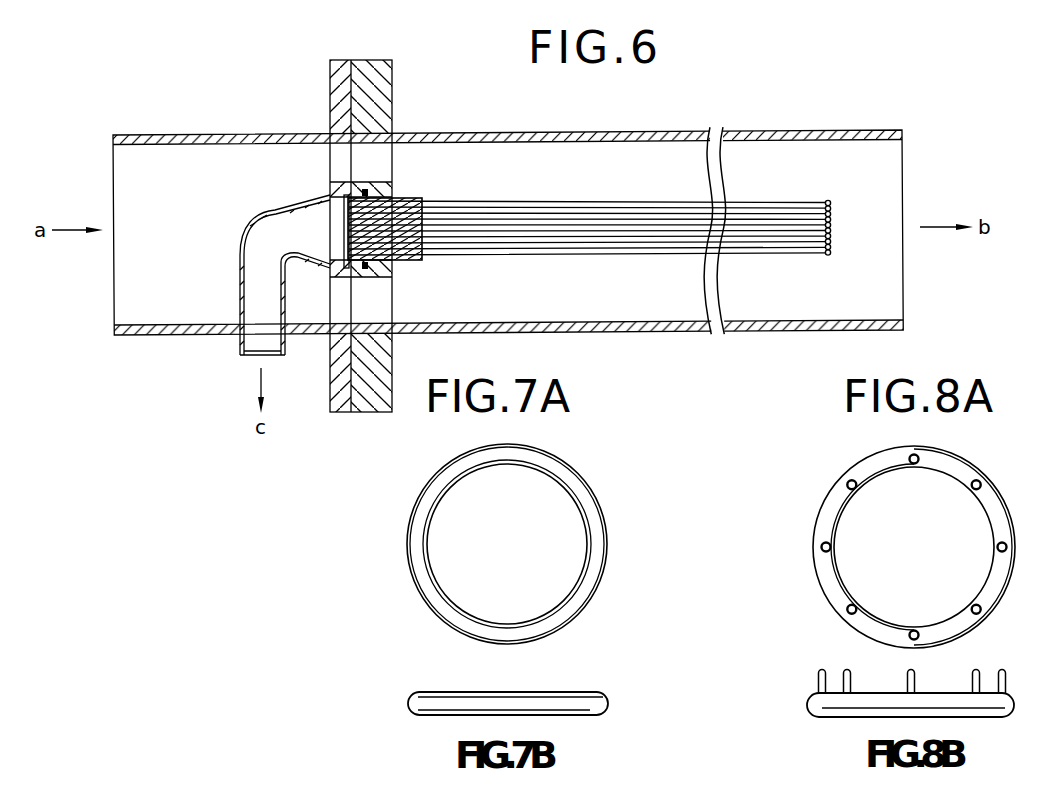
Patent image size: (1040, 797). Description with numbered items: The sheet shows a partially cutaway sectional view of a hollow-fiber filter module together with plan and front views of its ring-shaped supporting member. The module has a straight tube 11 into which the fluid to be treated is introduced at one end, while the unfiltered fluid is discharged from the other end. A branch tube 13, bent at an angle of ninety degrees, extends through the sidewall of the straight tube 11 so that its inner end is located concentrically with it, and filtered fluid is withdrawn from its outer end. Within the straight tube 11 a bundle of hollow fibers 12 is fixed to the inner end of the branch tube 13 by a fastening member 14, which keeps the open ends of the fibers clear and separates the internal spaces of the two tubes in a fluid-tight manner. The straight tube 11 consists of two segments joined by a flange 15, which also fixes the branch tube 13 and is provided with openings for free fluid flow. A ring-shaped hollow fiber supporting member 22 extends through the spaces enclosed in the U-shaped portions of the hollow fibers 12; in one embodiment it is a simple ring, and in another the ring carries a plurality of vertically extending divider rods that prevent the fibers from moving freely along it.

The straight tube 11 is at (213, 134).
The bundle of hollow fibers 12 is at (608, 256).
The branch tube 13 is at (268, 211).
The fastening member 14 is at (421, 262).
The flange 15 is at (392, 70).
The hollow fiber supporting member 22 is at (835, 213).